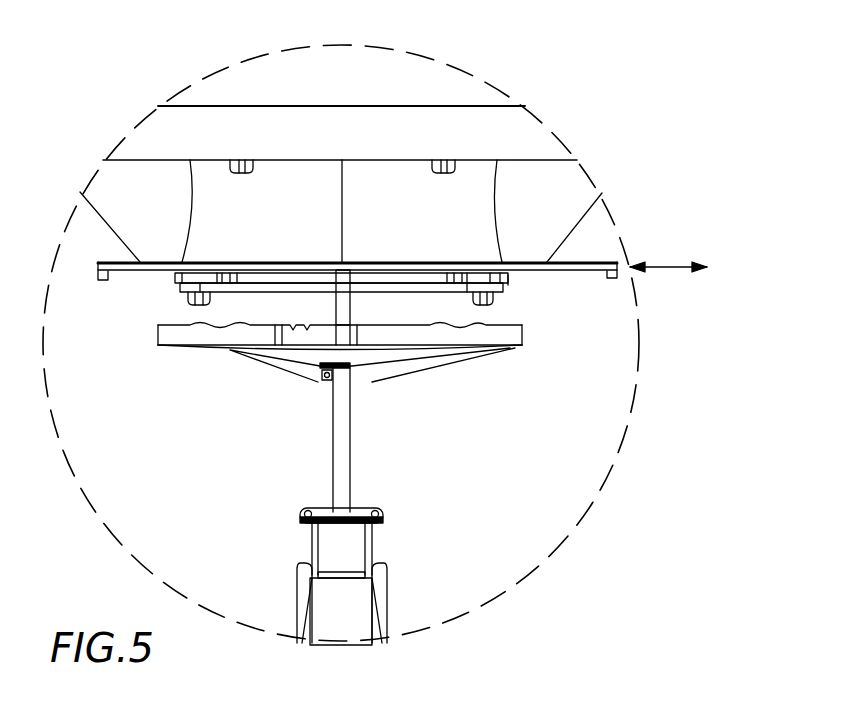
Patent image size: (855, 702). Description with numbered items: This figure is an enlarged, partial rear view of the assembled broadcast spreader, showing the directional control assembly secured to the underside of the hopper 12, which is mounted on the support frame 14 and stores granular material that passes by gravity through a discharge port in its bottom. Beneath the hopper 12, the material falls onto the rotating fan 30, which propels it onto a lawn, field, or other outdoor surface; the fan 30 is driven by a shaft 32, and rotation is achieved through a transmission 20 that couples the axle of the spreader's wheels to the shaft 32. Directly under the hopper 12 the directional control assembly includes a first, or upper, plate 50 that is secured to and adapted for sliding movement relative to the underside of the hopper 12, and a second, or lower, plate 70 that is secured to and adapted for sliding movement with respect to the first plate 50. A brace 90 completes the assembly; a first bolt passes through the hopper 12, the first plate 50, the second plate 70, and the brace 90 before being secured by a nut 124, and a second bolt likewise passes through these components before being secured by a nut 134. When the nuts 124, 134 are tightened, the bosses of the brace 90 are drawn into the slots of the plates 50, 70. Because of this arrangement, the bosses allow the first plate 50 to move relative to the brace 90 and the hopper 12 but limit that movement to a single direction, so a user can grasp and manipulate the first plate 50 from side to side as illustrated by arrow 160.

The hopper 12 is at (468, 90).
The support frame 14 is at (181, 118).
The transmission 20 is at (380, 580).
The fan 30 is at (518, 337).
The shaft 32 is at (343, 449).
The first plate 50 is at (103, 274).
The second plate 70 is at (513, 282).
The brace 90 is at (178, 287).
The nut 124 is at (208, 303).
The nut 134 is at (497, 303).
The arrow 160 is at (670, 265).